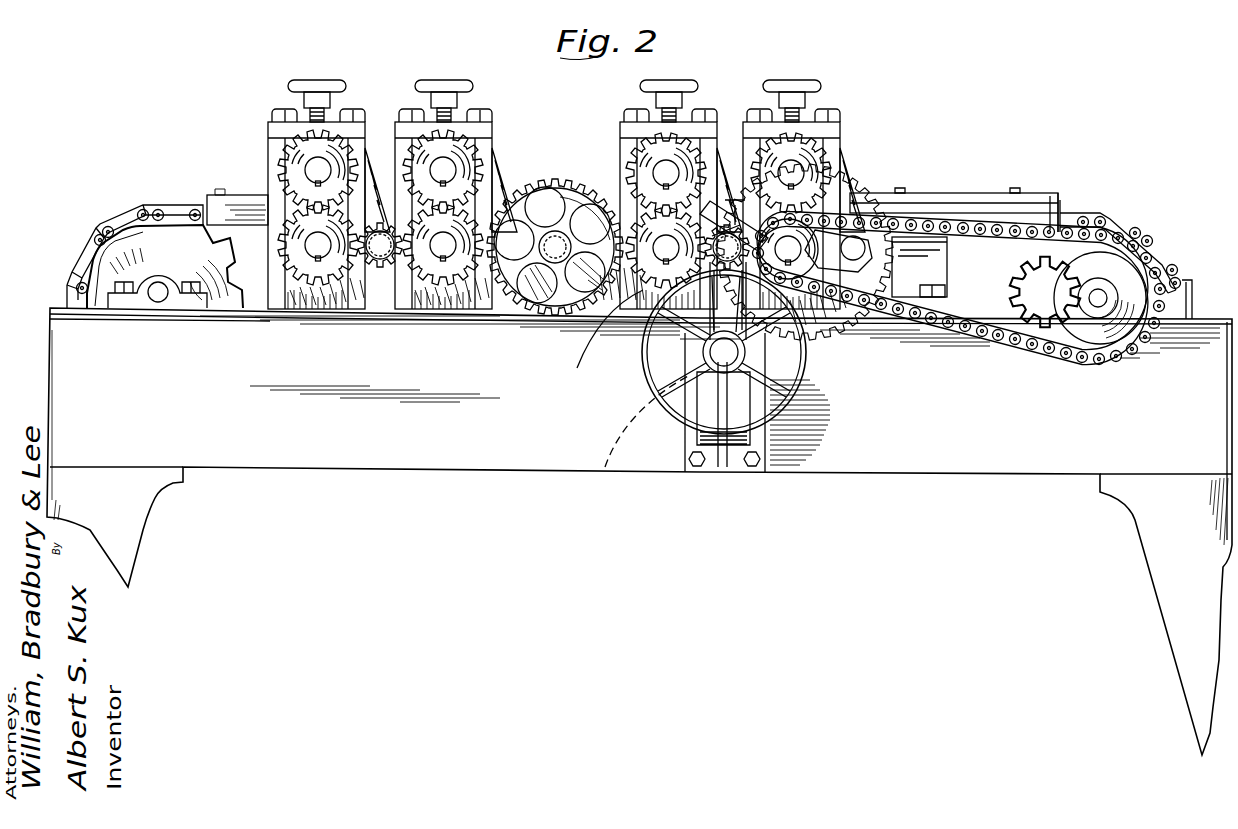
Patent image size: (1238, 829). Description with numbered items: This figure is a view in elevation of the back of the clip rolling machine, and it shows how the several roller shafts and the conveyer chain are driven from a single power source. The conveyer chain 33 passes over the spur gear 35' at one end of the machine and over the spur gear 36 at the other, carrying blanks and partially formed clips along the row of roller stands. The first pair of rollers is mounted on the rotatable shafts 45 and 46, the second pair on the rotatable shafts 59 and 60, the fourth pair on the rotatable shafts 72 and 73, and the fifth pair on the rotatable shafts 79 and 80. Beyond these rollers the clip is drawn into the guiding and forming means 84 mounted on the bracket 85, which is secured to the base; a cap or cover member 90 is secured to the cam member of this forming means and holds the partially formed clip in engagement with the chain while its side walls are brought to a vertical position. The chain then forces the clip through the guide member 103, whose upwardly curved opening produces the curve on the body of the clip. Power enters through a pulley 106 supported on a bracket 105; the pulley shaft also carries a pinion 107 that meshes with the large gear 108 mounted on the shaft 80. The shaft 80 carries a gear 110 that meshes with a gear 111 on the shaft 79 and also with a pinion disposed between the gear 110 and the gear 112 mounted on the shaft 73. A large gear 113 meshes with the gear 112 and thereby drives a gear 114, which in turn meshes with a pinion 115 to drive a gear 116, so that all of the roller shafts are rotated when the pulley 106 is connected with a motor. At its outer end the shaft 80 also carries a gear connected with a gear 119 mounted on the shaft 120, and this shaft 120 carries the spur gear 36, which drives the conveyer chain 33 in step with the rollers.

The conveyer chain 33 is at (79, 256).
The spur gear 35' is at (177, 237).
The spur gear 36 is at (1026, 283).
The rotatable shaft 45 is at (305, 164).
The rotatable shaft 46 is at (308, 238).
The rotatable shaft 59 is at (452, 166).
The rotatable shaft 60 is at (448, 240).
The rotatable shaft 72 is at (660, 168).
The rotatable shaft 73 is at (660, 243).
The rotatable shaft 79 is at (802, 168).
The rotatable shaft 80 is at (795, 243).
The guiding and forming means 84 is at (932, 220).
The bracket 85 is at (942, 284).
The cap or cover member 90 is at (918, 198).
The guide member 103 is at (1067, 172).
The bracket 105 is at (737, 452).
The pulley 106 is at (773, 377).
The pinion 107 is at (604, 470).
The large gear 108 is at (823, 340).
The gear 110 is at (742, 205).
The gear 111 is at (822, 145).
The gear 112 is at (585, 234).
The large gear 113 is at (556, 177).
The gear 114 is at (452, 286).
The pinion 115 is at (384, 268).
The gear 116 is at (311, 284).
The gear 119 is at (1130, 278).
The shaft 120 is at (1103, 291).